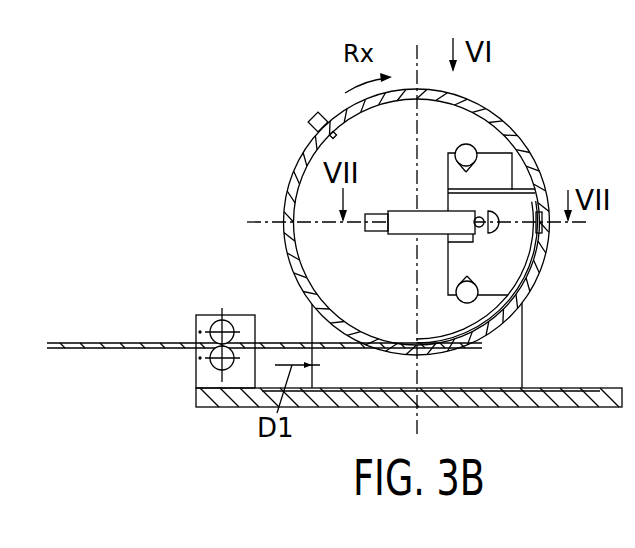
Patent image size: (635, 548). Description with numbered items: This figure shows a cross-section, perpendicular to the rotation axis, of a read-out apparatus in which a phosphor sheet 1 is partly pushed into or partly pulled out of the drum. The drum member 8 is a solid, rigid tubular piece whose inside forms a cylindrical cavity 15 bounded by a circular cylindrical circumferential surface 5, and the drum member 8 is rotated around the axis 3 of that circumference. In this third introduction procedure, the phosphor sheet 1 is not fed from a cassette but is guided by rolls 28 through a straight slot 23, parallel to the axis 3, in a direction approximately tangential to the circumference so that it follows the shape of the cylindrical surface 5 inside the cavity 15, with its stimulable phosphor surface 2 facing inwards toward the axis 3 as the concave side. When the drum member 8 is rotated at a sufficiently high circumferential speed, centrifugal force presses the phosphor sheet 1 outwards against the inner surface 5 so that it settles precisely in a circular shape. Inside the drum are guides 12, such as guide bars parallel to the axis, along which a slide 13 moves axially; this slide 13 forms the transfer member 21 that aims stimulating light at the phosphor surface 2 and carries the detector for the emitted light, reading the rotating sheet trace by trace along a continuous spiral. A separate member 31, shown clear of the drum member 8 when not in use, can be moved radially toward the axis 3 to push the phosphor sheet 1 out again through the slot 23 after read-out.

The phosphor sheet 1 is at (447, 341).
The stimulable phosphor surface 2 is at (468, 324).
The axis 3 is at (414, 220).
The cylindrical circumferential surface 5 is at (321, 286).
The drum member 8 is at (520, 126).
The guides 12 is at (470, 152).
The slide 13 is at (515, 272).
The cylindrical cavity 15 is at (410, 144).
The transfer member 21 is at (442, 122).
The slot 23 is at (420, 352).
The rolls 28 is at (172, 367).
The transfer member 31 is at (315, 118).